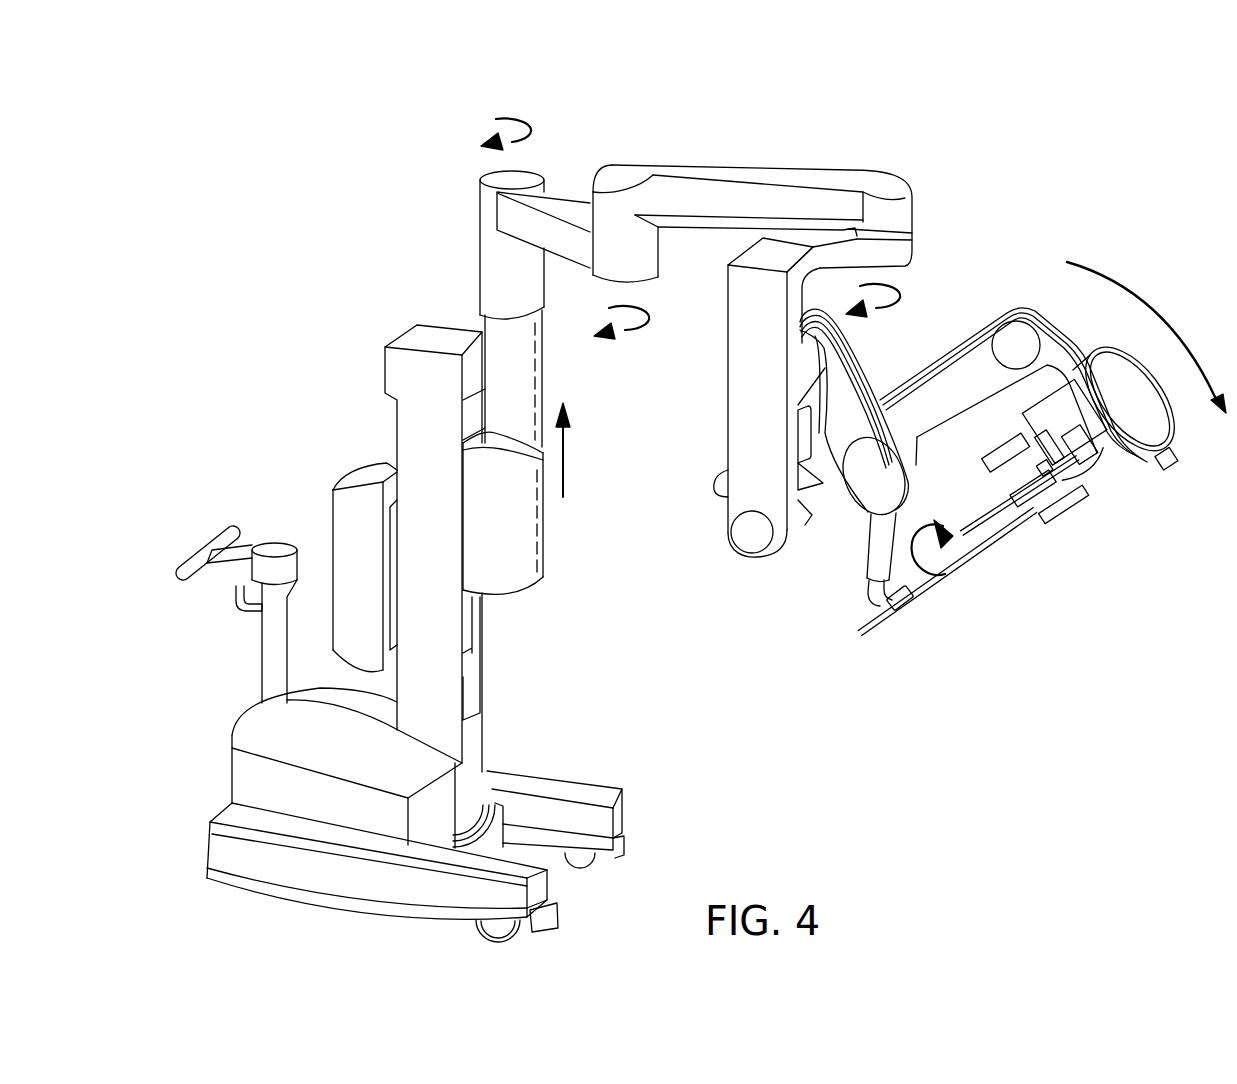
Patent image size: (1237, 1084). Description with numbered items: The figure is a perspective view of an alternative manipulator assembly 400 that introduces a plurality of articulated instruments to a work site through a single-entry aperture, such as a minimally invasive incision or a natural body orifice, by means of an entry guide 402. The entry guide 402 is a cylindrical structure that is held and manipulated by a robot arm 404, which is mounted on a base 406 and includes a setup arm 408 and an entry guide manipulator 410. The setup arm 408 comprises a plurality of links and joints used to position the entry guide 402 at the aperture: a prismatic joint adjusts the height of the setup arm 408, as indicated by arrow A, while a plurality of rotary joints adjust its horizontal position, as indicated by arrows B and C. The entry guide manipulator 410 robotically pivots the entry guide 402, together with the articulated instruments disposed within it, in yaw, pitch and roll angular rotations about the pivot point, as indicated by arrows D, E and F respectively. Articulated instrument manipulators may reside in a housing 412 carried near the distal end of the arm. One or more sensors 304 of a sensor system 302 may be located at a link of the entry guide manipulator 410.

The manipulator assembly 400 is at (370, 110).
The entry guide 402 is at (935, 574).
The robot arm 404 is at (752, 168).
The base 406 is at (553, 787).
The setup arm 408 is at (487, 245).
The entry guide manipulator 410 is at (866, 497).
The housing 412 is at (1107, 467).
The sensor system 302 is at (1093, 211).
The sensors 304 is at (1016, 335).